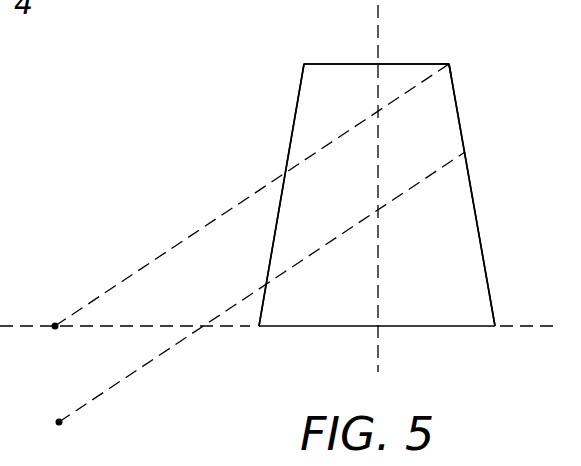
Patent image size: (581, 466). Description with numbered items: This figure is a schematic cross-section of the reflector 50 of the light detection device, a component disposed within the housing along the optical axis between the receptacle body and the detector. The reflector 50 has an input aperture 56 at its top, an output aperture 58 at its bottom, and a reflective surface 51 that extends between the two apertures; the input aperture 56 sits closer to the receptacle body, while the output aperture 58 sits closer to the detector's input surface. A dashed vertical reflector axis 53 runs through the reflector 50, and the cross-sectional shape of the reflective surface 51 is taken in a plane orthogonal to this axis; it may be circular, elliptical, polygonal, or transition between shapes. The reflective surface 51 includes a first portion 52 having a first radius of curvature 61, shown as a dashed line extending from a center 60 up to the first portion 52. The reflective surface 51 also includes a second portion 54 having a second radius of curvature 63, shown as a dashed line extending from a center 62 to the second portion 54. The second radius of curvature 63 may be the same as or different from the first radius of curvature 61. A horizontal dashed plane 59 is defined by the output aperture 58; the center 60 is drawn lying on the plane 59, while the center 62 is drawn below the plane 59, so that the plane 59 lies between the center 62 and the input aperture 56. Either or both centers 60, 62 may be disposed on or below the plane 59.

The reflector 50 is at (268, 85).
The reflective surface 51 is at (289, 140).
The first portion 52 is at (466, 57).
The reflector axis 53 is at (379, 13).
The second portion 54 is at (485, 144).
The input aperture 56 is at (326, 52).
The output aperture 58 is at (462, 327).
The plane 59 is at (162, 324).
The center 60 is at (55, 322).
The first radius of curvature 61 is at (142, 266).
The center 62 is at (59, 418).
The second radius of curvature 63 is at (143, 367).